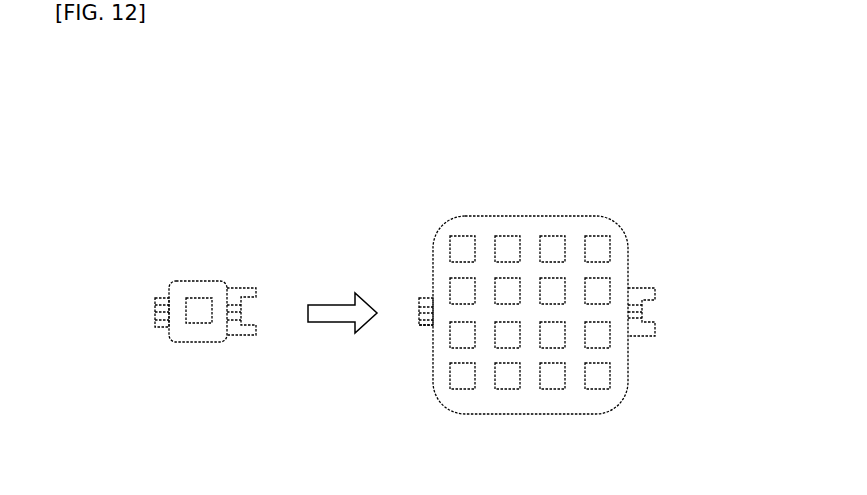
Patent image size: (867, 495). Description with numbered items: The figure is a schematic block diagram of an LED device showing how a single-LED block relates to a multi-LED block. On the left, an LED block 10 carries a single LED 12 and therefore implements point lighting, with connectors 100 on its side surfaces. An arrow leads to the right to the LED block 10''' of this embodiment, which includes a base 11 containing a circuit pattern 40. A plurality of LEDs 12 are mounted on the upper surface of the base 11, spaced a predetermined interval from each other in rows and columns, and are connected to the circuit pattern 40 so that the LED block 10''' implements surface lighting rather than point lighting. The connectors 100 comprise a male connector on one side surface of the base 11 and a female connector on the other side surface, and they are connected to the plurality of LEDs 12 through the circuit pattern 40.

The LED block 10 is at (198, 278).
The LED block 10''' is at (546, 303).
The base 11 is at (595, 226).
The LED 12 is at (553, 380).
The circuit pattern 40 is at (424, 333).
The connectors 100 is at (153, 390).